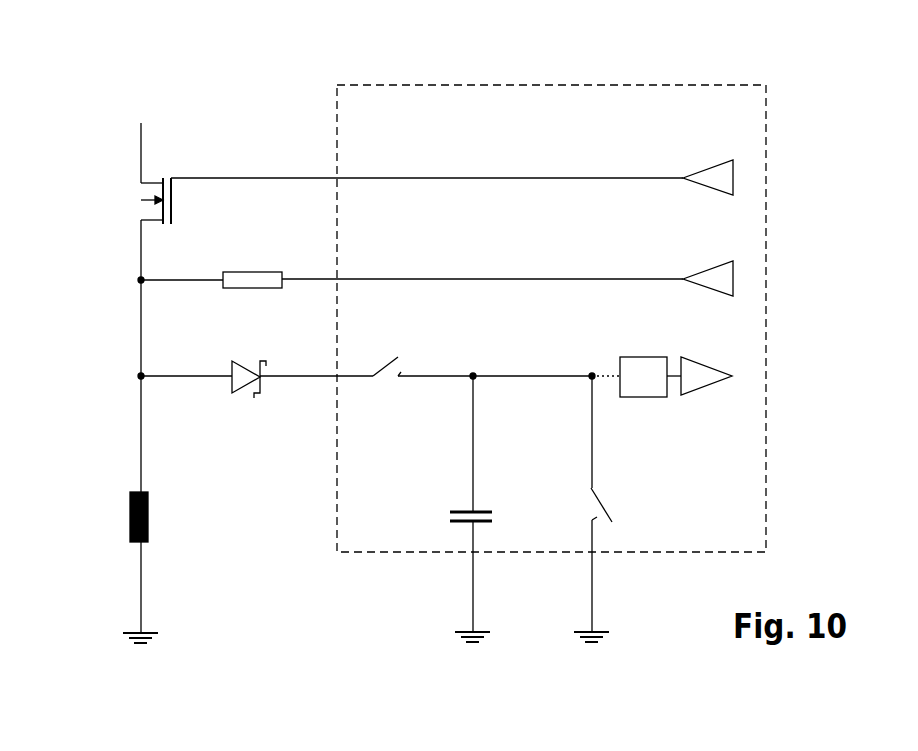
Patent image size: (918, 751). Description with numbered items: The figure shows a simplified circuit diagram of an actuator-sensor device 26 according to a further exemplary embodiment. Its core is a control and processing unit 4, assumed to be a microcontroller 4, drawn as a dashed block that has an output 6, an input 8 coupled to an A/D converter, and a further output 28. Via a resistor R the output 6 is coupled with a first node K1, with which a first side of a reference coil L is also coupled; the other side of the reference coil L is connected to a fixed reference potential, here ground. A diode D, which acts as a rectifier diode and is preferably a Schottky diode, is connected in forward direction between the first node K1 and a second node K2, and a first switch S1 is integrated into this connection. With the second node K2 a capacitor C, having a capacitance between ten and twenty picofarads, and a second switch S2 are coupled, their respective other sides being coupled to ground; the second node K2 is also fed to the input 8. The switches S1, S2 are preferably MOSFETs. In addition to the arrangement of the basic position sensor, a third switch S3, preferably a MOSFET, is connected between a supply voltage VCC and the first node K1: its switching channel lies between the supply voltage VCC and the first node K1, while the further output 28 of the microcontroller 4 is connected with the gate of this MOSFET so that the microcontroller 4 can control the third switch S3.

The control and processing unit 4 is at (566, 84).
The actuator-sensor device 26 is at (681, 69).
The further output 28 is at (713, 162).
The output 6 is at (713, 262).
The input 8 is at (707, 362).
The third switch S3 is at (118, 196).
The resistor R is at (258, 271).
The diode D is at (246, 358).
The first node K1 is at (128, 280).
The first switch S1 is at (385, 360).
The second node K2 is at (592, 362).
The capacitor C is at (457, 500).
The second switch S2 is at (607, 508).
The reference coil L is at (150, 515).
The supply voltage VCC is at (142, 136).